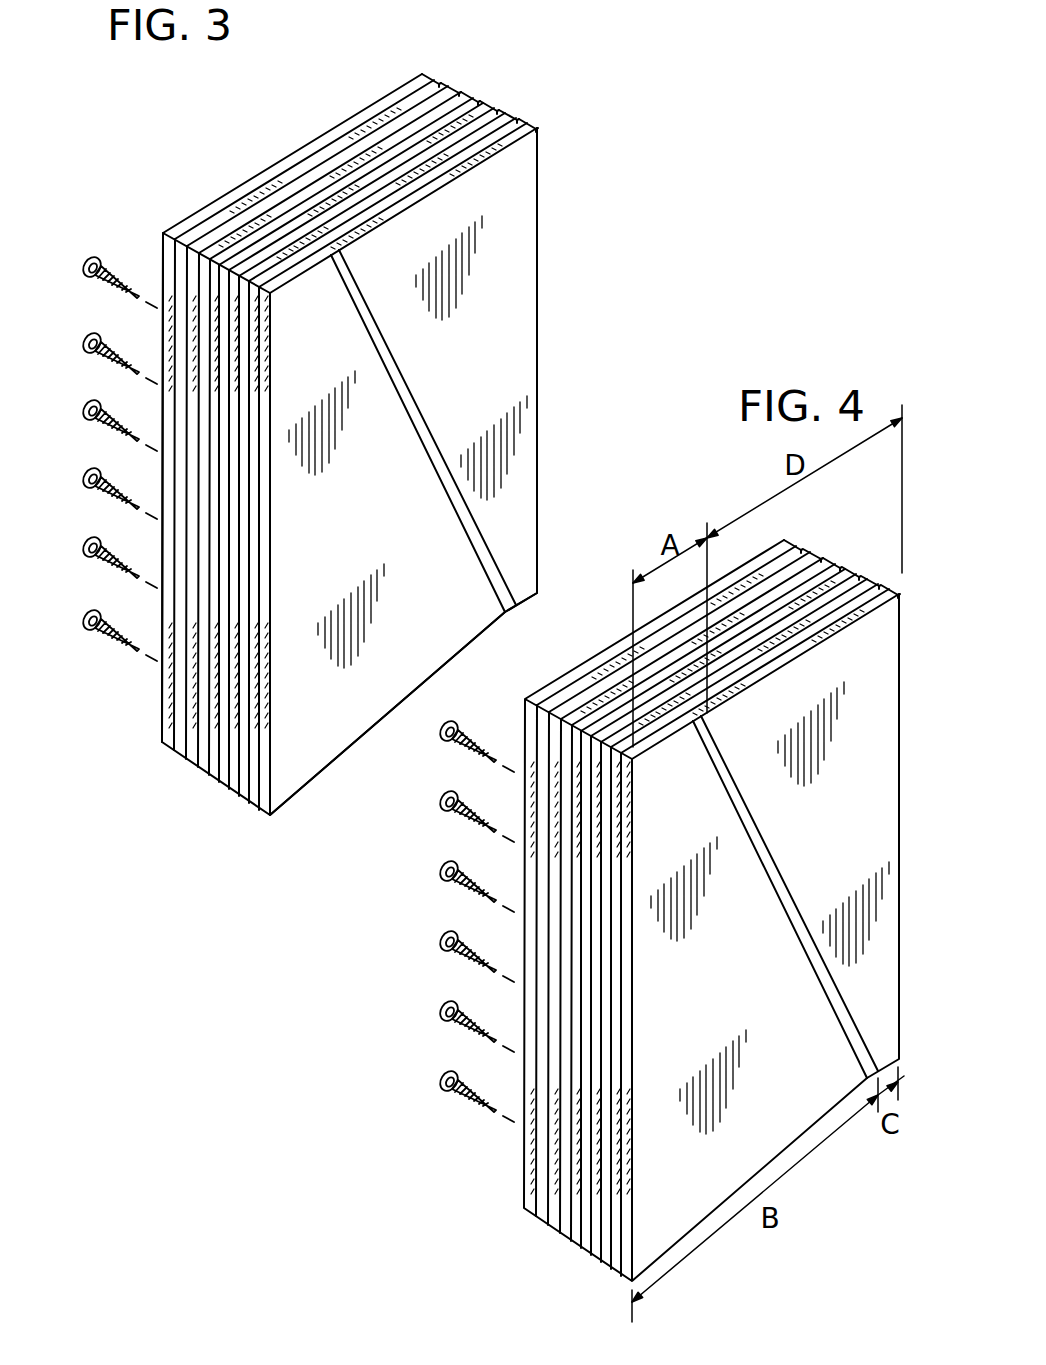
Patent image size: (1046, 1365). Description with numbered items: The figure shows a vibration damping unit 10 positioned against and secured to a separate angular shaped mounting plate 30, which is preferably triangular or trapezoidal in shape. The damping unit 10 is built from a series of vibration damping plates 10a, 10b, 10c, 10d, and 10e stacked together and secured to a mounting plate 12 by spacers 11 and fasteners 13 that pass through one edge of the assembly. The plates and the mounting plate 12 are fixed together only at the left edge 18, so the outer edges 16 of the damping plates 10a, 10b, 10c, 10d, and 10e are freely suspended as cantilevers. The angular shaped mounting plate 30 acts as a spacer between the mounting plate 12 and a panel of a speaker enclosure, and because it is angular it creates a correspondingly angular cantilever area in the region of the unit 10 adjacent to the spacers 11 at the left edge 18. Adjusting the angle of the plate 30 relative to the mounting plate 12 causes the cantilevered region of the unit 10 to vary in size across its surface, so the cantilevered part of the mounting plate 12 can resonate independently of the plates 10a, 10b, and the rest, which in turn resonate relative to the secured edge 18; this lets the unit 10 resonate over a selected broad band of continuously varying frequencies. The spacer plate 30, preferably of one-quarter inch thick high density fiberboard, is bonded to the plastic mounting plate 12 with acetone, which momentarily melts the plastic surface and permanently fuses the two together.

The vibration damping unit 10 is at (288, 125).
The vibration damping plate 10a is at (427, 74).
The vibration damping plate 10b is at (448, 86).
The vibration damping plate 10c is at (466, 95).
The vibration damping plate 10d is at (480, 100).
The vibration damping plate 10e is at (498, 108).
The spacers 11 is at (170, 748).
The mounting plate 12 is at (518, 118).
The fasteners 13 is at (84, 408).
The outer edges of the damping plates 16 is at (375, 98).
The left edge 18 is at (158, 600).
The angular shaped mounting plate 30 is at (540, 378).